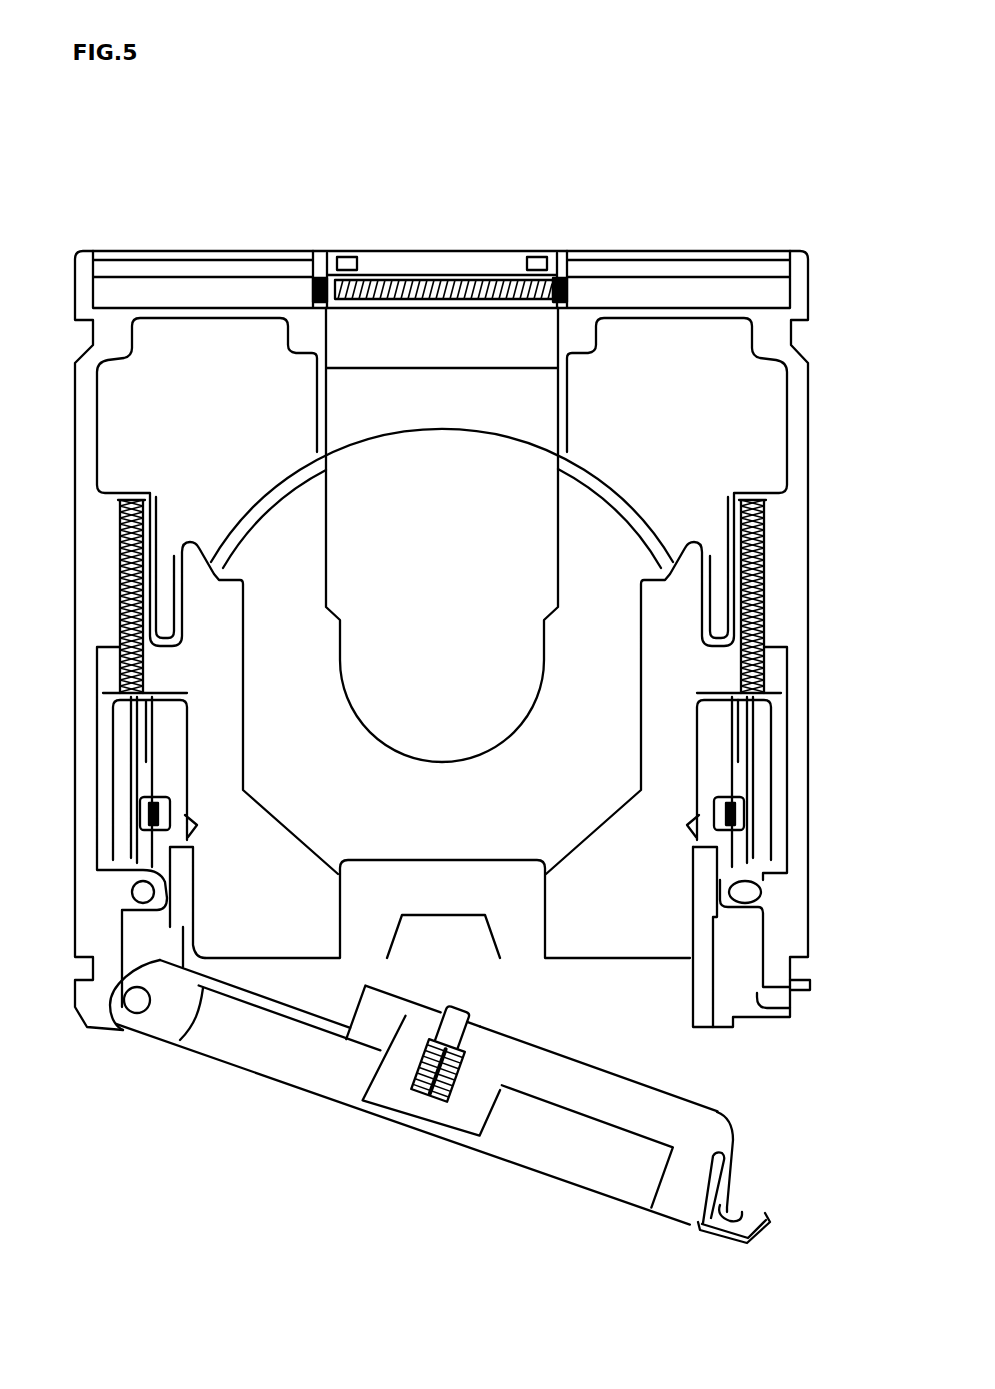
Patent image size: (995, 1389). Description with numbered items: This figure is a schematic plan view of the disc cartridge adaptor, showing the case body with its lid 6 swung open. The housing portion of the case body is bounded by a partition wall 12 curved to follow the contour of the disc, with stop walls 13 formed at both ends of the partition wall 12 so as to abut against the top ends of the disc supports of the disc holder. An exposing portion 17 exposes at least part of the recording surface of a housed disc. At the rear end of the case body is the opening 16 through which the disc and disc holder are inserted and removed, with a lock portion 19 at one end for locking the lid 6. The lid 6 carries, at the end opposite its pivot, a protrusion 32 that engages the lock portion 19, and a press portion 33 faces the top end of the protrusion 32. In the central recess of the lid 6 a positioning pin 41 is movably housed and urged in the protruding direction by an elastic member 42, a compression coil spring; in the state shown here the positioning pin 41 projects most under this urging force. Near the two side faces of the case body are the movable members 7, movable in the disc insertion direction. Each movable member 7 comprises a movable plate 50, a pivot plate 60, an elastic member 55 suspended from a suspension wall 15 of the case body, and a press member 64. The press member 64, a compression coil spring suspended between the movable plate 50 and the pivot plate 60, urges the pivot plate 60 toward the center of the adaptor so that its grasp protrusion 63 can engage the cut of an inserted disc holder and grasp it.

The open/close member (lid) 6 is at (307, 1097).
The movable member 7 is at (780, 713).
The partition wall 12 is at (578, 464).
The stop wall 13 is at (190, 542).
The suspension wall 15 is at (750, 500).
The opening 16 is at (453, 955).
The exposing portion 17 is at (437, 493).
The lock portion 19 is at (798, 1000).
The protrusion 32 is at (733, 1207).
The press portion 33 is at (773, 1230).
The positioning pin 41 is at (457, 1033).
The elastic member 42 is at (427, 1100).
The movable plate 50 is at (812, 740).
The elastic member 55 is at (765, 572).
The pivot plate 60 is at (723, 768).
The grasp protrusion 63 is at (725, 835).
The press member 64 is at (735, 800).